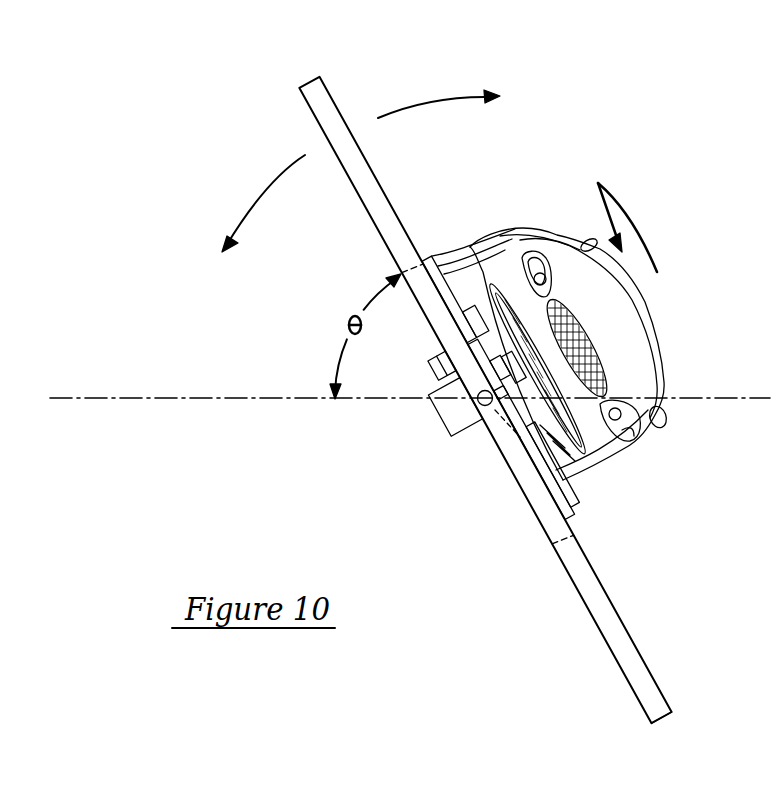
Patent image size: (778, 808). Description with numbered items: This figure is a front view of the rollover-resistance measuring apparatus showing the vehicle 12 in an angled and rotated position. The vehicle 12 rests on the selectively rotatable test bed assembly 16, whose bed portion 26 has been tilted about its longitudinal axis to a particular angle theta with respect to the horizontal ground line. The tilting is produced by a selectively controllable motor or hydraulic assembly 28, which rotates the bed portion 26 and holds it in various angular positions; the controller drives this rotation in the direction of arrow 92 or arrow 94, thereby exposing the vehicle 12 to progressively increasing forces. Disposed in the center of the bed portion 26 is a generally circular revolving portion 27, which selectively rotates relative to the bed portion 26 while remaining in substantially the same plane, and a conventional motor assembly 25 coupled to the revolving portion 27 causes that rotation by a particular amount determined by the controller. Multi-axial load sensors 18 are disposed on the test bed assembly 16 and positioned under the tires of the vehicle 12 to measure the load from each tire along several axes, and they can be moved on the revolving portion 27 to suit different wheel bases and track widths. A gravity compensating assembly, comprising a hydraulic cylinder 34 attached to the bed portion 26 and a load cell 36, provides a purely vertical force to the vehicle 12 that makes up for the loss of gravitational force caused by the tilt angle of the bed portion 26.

The vehicle 12 is at (650, 304).
The test bed assembly 16 is at (600, 630).
The load sensors 18 is at (437, 262).
The motor assembly 25 is at (433, 372).
The bed portion 26 is at (653, 673).
The revolving portion 27 is at (552, 523).
The motor or hydraulic assembly 28 is at (490, 414).
The hydraulic cylinder 34 is at (433, 427).
The load cell 36 is at (524, 426).
The arrow 92 is at (420, 100).
The arrow 94 is at (265, 193).